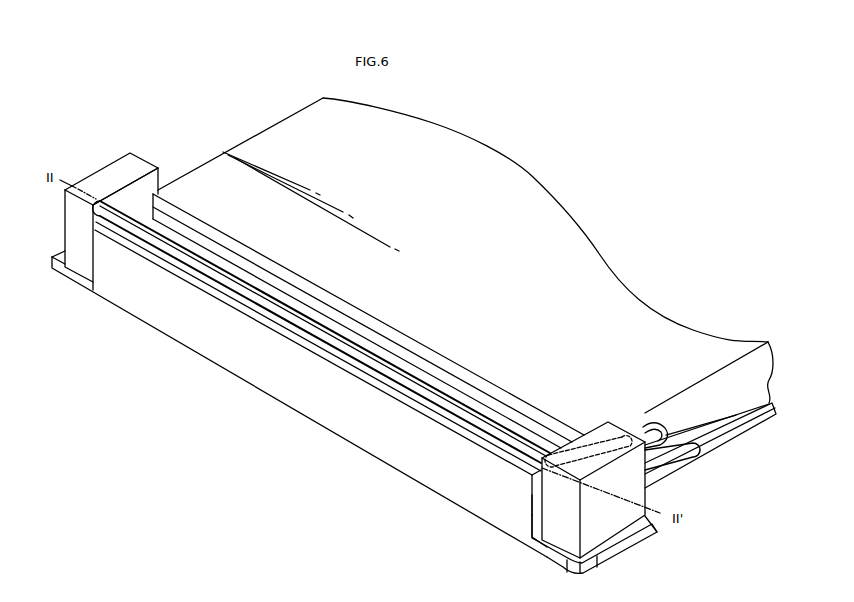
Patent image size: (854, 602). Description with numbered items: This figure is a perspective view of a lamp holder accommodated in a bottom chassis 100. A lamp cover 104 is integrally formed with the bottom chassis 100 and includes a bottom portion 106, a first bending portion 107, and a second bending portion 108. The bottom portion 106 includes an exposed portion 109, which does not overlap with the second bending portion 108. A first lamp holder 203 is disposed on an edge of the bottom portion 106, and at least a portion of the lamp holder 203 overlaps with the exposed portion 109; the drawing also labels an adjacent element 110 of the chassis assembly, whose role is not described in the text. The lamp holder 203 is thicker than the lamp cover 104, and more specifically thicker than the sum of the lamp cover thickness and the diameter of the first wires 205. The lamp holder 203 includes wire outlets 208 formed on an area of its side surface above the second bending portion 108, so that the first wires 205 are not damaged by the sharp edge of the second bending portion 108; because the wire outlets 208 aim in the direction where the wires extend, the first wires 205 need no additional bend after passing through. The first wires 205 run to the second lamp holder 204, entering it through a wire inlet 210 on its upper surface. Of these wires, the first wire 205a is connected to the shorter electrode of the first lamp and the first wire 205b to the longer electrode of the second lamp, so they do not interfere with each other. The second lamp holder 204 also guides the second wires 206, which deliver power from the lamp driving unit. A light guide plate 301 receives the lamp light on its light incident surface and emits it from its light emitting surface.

The bottom chassis 100 is at (321, 398).
The lamp cover 104 is at (313, 384).
The bottom portion 106 is at (466, 517).
The first bending portion 107 is at (470, 508).
The second bending portion 108 is at (480, 480).
The exposed portion 109 is at (548, 556).
The bottom chassis 110 is at (124, 240).
The first lamp holder 203 is at (78, 224).
The second lamp holder 204 is at (572, 540).
The first wires 205 is at (668, 434).
The first wire connected to the electrode of the first lamp 205a is at (293, 302).
The first wire connected to the electrode of the second lamp 205b is at (322, 346).
The second wires 206 is at (693, 458).
The wire outlets 208 is at (112, 193).
The wire inlet 210 is at (560, 452).
The light guide plate 301 is at (750, 380).